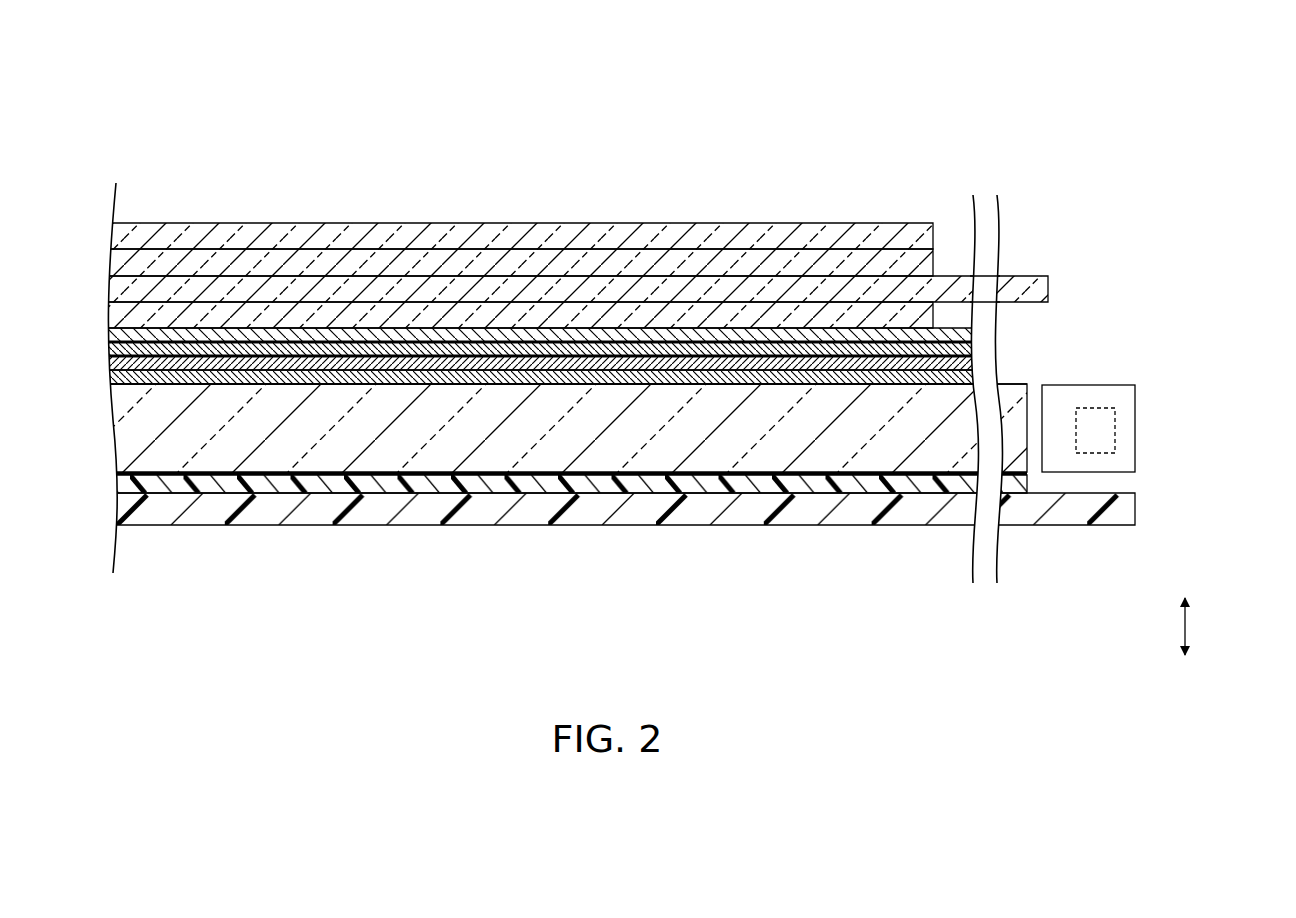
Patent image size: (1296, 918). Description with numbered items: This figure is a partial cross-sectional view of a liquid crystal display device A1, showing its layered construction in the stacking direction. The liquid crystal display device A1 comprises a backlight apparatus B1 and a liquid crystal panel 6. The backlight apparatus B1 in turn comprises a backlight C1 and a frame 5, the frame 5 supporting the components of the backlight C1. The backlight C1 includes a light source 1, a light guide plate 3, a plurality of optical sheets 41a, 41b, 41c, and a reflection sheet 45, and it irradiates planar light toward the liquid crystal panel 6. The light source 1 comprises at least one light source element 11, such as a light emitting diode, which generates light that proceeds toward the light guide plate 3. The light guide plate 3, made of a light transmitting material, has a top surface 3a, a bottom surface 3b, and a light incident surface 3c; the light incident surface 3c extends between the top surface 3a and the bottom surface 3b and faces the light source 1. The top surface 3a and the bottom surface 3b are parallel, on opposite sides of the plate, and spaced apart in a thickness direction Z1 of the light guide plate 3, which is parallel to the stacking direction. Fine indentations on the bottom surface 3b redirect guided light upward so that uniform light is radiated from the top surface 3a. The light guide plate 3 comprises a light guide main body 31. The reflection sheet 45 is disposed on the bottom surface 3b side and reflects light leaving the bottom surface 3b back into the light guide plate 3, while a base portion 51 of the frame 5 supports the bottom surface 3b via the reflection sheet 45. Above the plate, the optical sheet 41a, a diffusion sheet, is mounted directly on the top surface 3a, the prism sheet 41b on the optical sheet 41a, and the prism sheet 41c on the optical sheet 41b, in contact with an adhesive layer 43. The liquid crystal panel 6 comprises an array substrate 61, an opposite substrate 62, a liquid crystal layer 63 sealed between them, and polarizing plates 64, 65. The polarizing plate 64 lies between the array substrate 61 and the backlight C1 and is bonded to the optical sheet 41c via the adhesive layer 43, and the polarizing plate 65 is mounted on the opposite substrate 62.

The liquid crystal display device A1 is at (152, 116).
The liquid crystal panel 6 is at (659, 248).
The array substrate 61 is at (357, 284).
The opposite substrate 62 is at (534, 263).
The liquid crystal layer 63 is at (423, 272).
The polarizing plate 64 is at (287, 310).
The polarizing plate 65 is at (472, 240).
The adhesive layer 43 is at (545, 475).
The optical sheet 41a is at (269, 352).
The optical sheet 41b is at (300, 366).
The optical sheet 41c is at (380, 378).
The light guide plate 3 is at (576, 507).
The top surface 3a is at (626, 378).
The bottom surface 3b is at (670, 483).
The light incident surface 3c is at (1027, 440).
The light guide main body 31 is at (808, 457).
The reflection sheet 45 is at (538, 485).
The frame 5 is at (664, 544).
The base portion 51 is at (500, 505).
The light source 1 is at (1108, 428).
The light source element 11 is at (1103, 432).
The backlight C1 is at (1189, 353).
The backlight apparatus B1 is at (1237, 413).
The thickness direction Z1 is at (1185, 626).